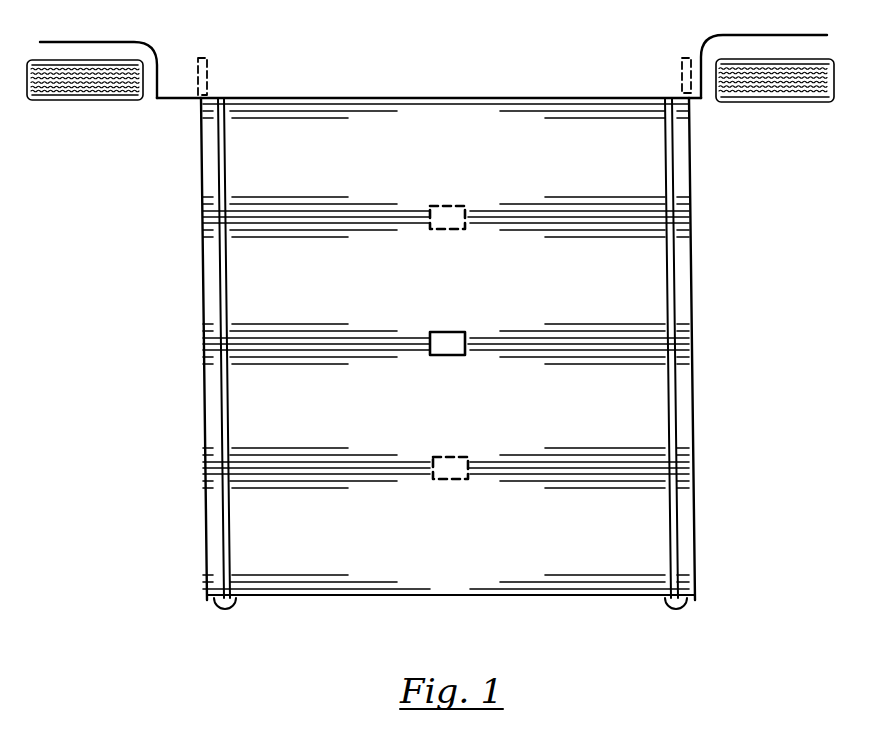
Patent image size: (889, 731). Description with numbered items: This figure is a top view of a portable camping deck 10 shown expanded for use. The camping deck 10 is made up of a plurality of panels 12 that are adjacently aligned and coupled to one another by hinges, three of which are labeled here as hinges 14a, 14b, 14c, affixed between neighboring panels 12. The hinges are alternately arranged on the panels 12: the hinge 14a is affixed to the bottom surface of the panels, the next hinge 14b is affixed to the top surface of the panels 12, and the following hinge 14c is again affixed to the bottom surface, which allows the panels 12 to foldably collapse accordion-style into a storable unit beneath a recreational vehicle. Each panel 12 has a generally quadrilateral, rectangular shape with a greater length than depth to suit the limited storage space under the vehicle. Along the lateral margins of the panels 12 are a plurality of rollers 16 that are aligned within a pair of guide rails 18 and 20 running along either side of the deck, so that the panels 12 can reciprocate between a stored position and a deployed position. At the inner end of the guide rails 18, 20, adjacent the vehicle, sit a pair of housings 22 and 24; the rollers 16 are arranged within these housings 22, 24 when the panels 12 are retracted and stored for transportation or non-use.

The portable camping deck 10 is at (776, 352).
The panels 12 is at (376, 597).
The hinge 14a is at (463, 206).
The hinge 14b is at (466, 355).
The hinge 14c is at (469, 480).
The rollers 16 is at (228, 117).
The guide rail 18 is at (202, 303).
The guide rail 20 is at (692, 292).
The housing 22 is at (208, 78).
The housing 24 is at (681, 73).